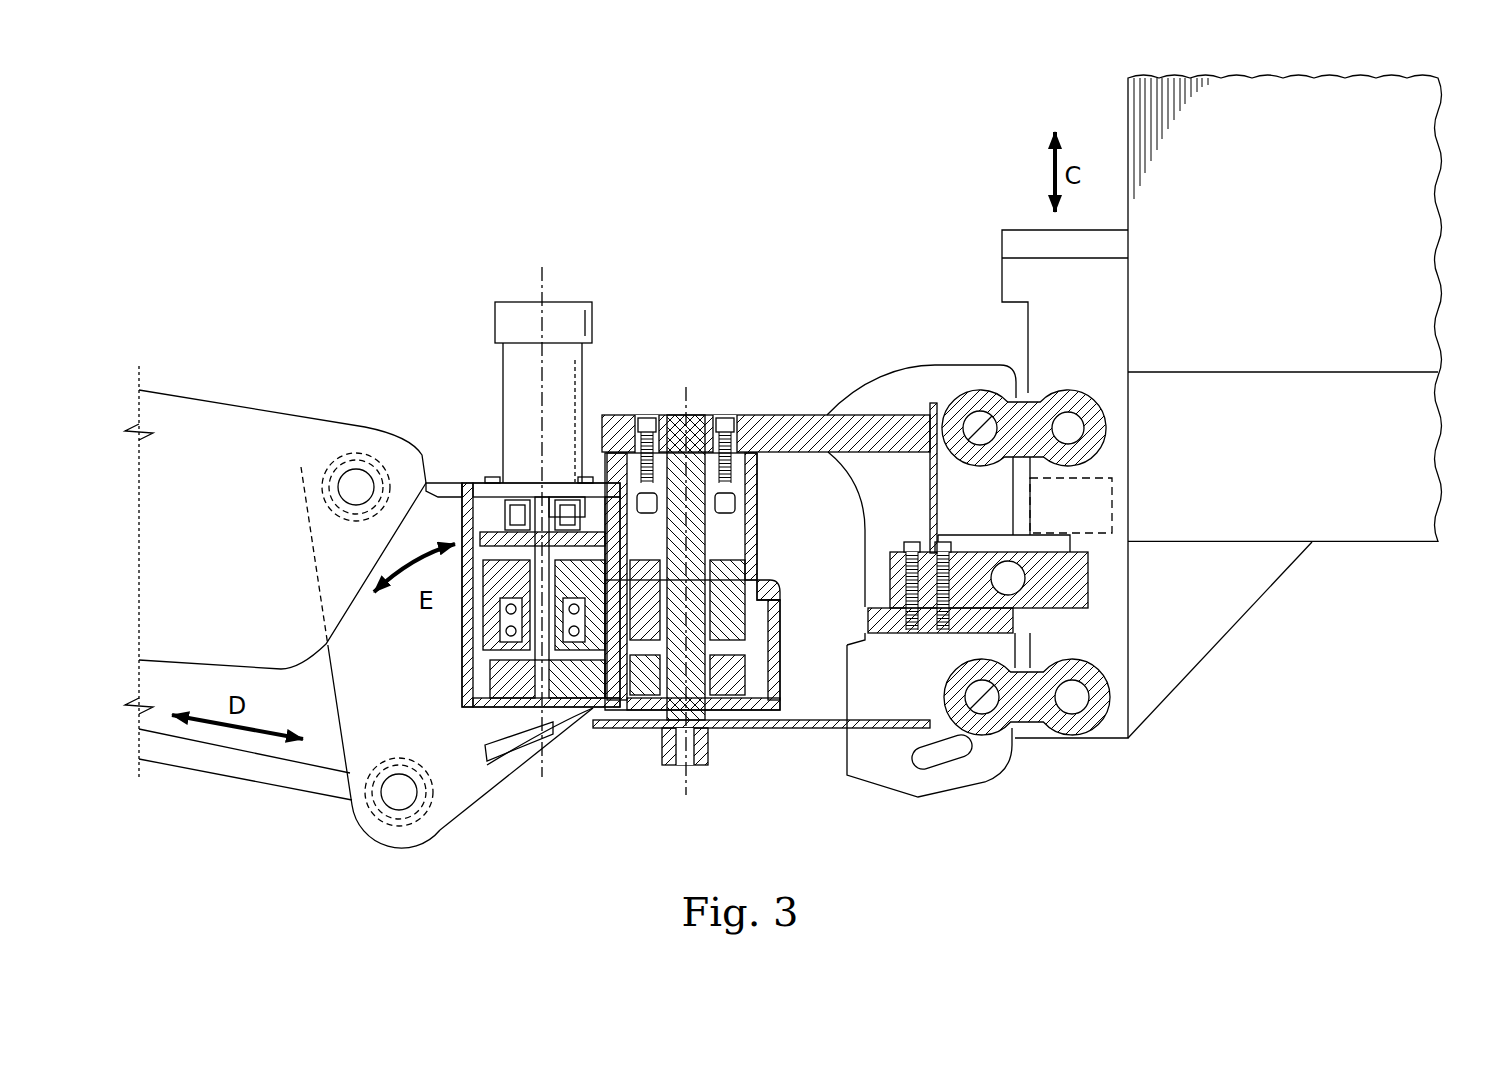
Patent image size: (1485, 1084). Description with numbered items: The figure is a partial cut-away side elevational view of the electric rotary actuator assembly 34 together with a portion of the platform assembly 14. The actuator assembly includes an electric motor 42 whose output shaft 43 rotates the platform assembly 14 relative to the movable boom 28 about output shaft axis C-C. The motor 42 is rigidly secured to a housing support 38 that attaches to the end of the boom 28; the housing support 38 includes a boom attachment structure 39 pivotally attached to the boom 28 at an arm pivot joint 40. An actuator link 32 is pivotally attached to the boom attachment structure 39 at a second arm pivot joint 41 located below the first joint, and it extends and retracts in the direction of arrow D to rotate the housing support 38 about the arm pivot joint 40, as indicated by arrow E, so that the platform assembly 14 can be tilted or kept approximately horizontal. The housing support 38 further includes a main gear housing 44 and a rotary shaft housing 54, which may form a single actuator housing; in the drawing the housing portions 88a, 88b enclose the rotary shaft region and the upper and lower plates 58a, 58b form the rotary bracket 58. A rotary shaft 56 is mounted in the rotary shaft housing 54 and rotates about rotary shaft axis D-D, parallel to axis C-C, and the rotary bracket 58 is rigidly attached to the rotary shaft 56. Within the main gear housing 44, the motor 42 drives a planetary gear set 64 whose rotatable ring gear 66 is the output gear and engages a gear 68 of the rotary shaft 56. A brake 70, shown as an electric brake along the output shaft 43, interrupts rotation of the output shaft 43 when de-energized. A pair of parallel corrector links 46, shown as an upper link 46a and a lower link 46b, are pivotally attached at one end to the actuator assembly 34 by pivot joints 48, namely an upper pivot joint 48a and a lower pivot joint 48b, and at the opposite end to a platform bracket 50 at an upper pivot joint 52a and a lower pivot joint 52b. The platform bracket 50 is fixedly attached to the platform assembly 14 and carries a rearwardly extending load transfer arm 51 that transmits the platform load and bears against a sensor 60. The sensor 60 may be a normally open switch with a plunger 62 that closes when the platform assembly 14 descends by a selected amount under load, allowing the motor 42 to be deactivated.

The platform assembly 14 is at (1382, 548).
The movable boom 28 is at (283, 412).
The actuator link 32 is at (232, 778).
The electric rotary actuator assembly 34 is at (862, 279).
The housing support 38 is at (513, 783).
The boom attachment structure 39 is at (447, 655).
The arm pivot joint 40 is at (356, 506).
The arm pivot joint 41 is at (398, 774).
The electric motor 42 is at (579, 277).
The output shaft 43 is at (480, 477).
The main gear housing 44 is at (562, 712).
The links 46 is at (1088, 584).
The upper link 46a is at (1071, 388).
The lower link 46b is at (1114, 700).
The pivot joints 48 is at (921, 572).
The upper pivot joint 48a is at (978, 425).
The lower pivot joint 48b is at (975, 695).
The platform bracket 50 is at (1123, 640).
The load transfer arm 51 is at (1112, 505).
The upper pivot joint 52a is at (1076, 432).
The lower pivot joint 52b is at (1073, 702).
The rotary shaft housing 54 is at (716, 735).
The rotary shaft 56 is at (706, 389).
The rotary bracket 58 is at (765, 606).
The upper plate 58a is at (806, 430).
The lower plate 58b is at (790, 729).
The sensor 60 is at (1066, 612).
The plunger 62 is at (982, 548).
The planetary gear set 64 is at (458, 476).
The rotatable ring gear 66 is at (462, 641).
The gear 68 is at (780, 595).
The brake 70 is at (566, 428).
The upper housing 88a is at (762, 540).
The lower housing 88b is at (781, 660).